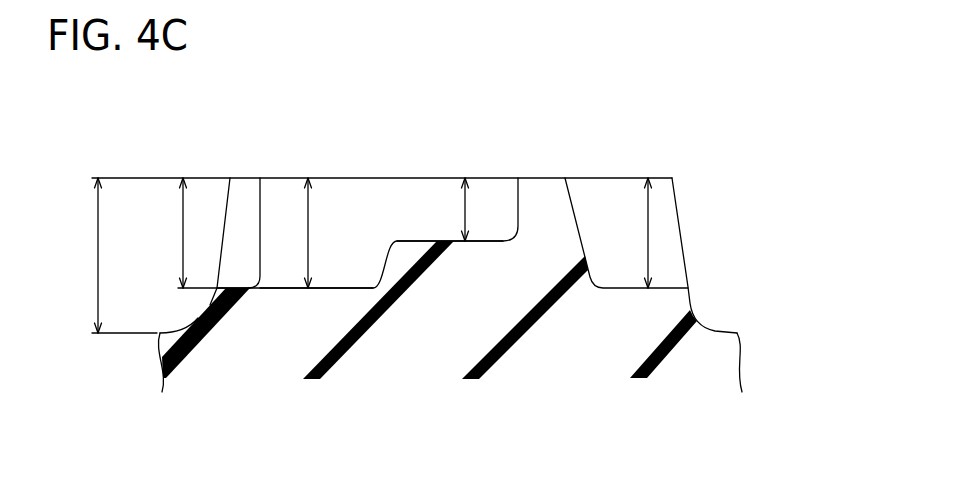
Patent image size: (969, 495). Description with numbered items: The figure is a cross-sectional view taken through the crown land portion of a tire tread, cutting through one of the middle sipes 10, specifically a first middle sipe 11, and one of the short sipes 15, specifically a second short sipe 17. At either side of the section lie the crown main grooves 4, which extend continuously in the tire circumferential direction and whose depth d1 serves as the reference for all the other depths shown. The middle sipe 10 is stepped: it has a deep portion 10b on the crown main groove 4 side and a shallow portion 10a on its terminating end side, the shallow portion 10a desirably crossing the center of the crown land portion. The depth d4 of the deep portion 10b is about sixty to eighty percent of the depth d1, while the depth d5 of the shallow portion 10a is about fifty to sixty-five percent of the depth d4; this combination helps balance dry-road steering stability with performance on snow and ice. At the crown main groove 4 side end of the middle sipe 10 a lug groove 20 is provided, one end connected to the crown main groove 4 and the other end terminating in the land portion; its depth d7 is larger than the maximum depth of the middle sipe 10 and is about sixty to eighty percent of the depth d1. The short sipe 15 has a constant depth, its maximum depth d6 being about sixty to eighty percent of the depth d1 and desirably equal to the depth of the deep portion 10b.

The crown main groove 4 is at (189, 319).
The middle sipe 10 is at (402, 210).
The first middle sipe 11 is at (348, 164).
The shallow portion 10a is at (423, 240).
The deep portion 10b is at (280, 230).
The short sipe 15 is at (610, 230).
The second short sipe 17 is at (614, 176).
The lug groove 20 is at (241, 228).
The depth of crown main groove d1 is at (109, 255).
The depth of deep portion d4 is at (310, 230).
The depth of shallow portion d5 is at (466, 210).
The maximum depth of short sipe d6 is at (648, 232).
The depth of lug groove d7 is at (165, 233).